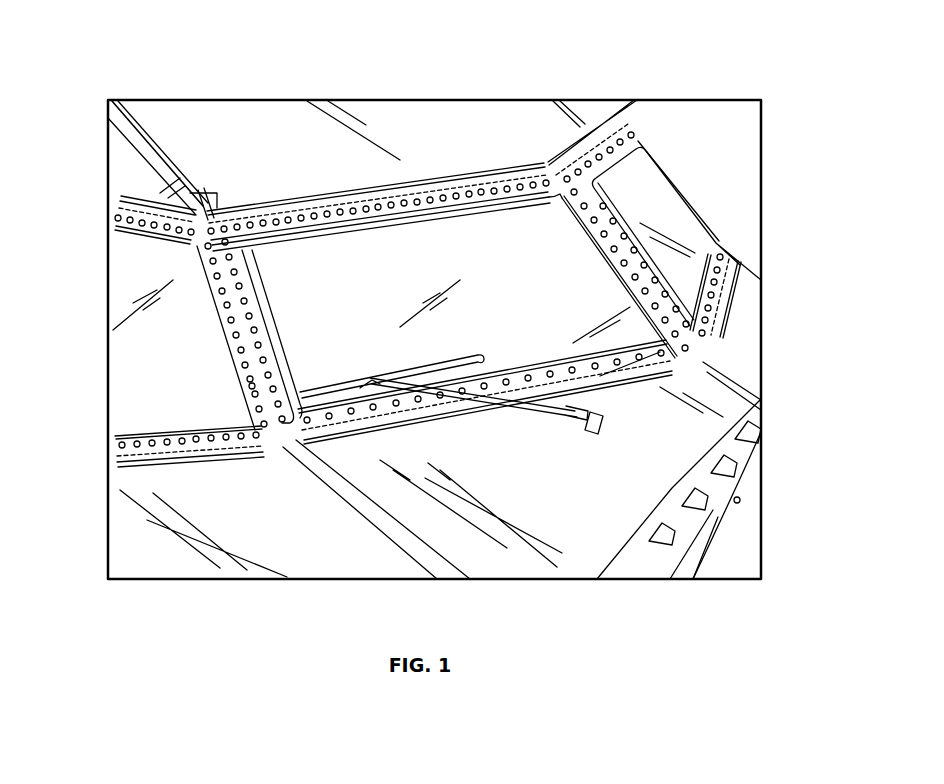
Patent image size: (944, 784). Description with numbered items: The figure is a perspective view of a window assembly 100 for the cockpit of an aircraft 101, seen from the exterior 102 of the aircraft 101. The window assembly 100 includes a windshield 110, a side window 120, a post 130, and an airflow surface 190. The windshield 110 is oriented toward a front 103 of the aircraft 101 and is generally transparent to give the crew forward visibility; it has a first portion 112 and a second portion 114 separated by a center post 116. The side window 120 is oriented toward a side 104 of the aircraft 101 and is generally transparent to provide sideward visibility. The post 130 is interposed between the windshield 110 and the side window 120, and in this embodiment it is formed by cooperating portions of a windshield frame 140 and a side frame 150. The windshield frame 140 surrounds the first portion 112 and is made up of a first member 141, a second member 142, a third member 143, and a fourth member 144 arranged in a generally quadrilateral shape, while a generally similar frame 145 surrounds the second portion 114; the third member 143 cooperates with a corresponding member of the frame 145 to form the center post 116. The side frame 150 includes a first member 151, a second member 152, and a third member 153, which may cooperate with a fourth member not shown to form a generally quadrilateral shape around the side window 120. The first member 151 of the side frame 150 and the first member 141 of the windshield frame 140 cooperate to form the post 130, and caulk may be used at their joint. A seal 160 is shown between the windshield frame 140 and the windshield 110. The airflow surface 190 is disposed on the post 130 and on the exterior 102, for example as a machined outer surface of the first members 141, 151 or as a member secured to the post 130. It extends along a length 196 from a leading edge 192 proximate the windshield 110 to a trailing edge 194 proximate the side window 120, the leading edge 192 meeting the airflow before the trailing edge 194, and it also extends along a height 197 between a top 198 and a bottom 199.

The window assembly 100 is at (512, 46).
The aircraft 101 is at (117, 128).
The exterior 102 is at (334, 128).
The front 103 is at (797, 407).
The side 104 is at (76, 359).
The windshield 110 is at (473, 230).
The first portion 112 is at (547, 225).
The second portion 114 is at (627, 183).
The center post 116 is at (583, 190).
The side window 120 is at (131, 253).
The post 130 is at (256, 276).
The windshield frame 140 is at (372, 180).
The first member 141 is at (345, 432).
The second member 142 is at (420, 197).
The third member 143 is at (658, 312).
The fourth member 144 is at (608, 365).
The frame 145 is at (750, 298).
The side frame 150 is at (128, 185).
The first member 151 is at (253, 387).
The second member 152 is at (150, 218).
The third member 153 is at (138, 444).
The seal 160 is at (331, 245).
The airflow surface 190 is at (264, 419).
The leading edge 192 is at (242, 238).
The trailing edge 194 is at (131, 190).
The length 196 is at (198, 216).
The height 197 is at (279, 400).
The top 198 is at (217, 192).
The bottom 199 is at (273, 462).